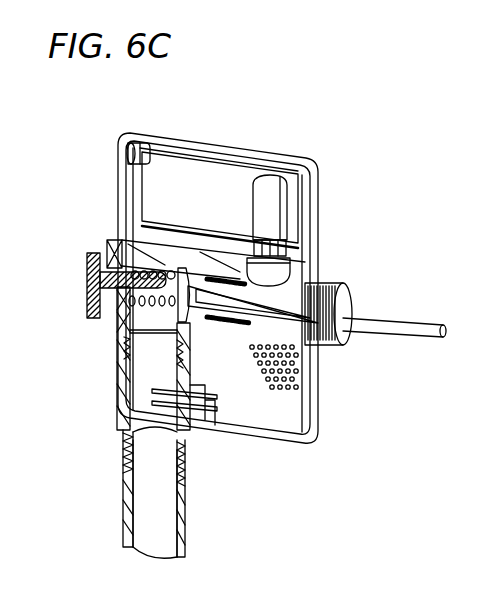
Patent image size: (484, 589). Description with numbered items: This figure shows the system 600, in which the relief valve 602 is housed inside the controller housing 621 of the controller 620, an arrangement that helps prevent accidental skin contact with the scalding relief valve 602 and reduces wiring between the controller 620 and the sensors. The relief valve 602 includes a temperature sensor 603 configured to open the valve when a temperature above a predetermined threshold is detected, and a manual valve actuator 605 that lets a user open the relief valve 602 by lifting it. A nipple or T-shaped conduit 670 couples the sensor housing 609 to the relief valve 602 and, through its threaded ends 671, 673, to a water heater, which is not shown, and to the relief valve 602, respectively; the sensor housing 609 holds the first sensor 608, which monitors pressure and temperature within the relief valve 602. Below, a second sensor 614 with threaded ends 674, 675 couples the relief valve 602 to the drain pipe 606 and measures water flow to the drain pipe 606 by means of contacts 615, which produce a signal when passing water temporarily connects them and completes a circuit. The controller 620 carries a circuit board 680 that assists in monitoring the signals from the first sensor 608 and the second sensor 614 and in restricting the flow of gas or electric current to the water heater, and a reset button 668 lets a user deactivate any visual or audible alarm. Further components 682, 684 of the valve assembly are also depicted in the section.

The system 600 is at (353, 120).
The relief valve 602 is at (99, 231).
The temperature sensor 603 is at (413, 318).
The manual valve actuator 605 is at (87, 300).
The drain pipe 606 is at (190, 545).
The first sensor 608 is at (292, 231).
The sensor housing 609 is at (267, 188).
The second sensor 614 is at (122, 462).
The contacts 615 is at (214, 398).
The controller 620 is at (328, 444).
The controller housing 621 is at (318, 392).
The reset button 668 is at (113, 152).
The conduit 670 is at (318, 280).
The threaded end 671 is at (338, 345).
The threaded end 673 is at (236, 332).
The threaded end 674 is at (178, 318).
The threaded end 675 is at (123, 445).
The circuit board 680 is at (200, 176).
The upper spring 682 is at (150, 318).
The lower spring 684 is at (178, 336).